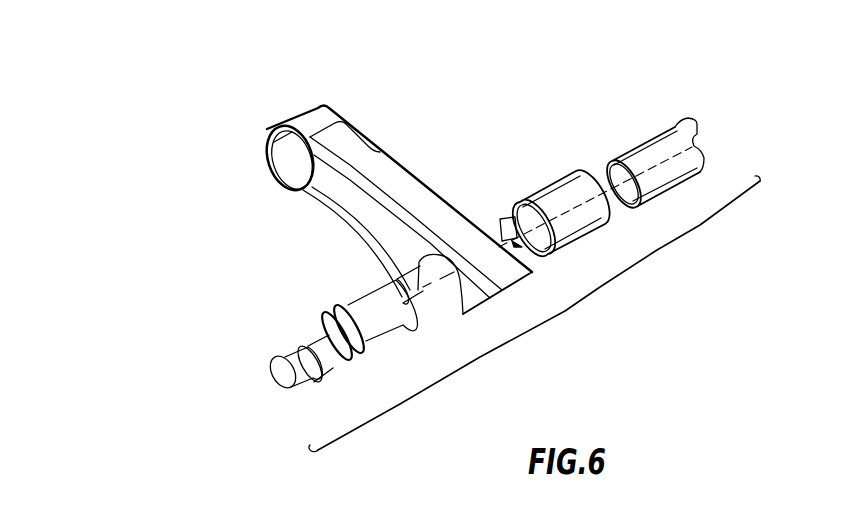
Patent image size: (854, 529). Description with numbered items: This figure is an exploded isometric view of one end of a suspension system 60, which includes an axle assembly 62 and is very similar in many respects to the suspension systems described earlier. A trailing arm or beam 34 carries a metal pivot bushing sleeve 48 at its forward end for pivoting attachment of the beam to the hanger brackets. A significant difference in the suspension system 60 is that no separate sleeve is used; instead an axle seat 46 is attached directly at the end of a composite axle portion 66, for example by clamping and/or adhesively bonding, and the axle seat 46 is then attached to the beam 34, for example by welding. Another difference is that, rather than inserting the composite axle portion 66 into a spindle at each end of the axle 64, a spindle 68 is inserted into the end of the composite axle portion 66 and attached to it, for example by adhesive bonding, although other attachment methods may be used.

The suspension system 60 is at (213, 196).
The beam 34 is at (414, 176).
The pivot bushing sleeve 48 is at (341, 109).
The spindle 68 is at (331, 320).
The axle assembly 62 is at (648, 113).
The axle seat 46 is at (543, 190).
The composite axle portion 66 is at (634, 142).
The axle 64 is at (565, 312).